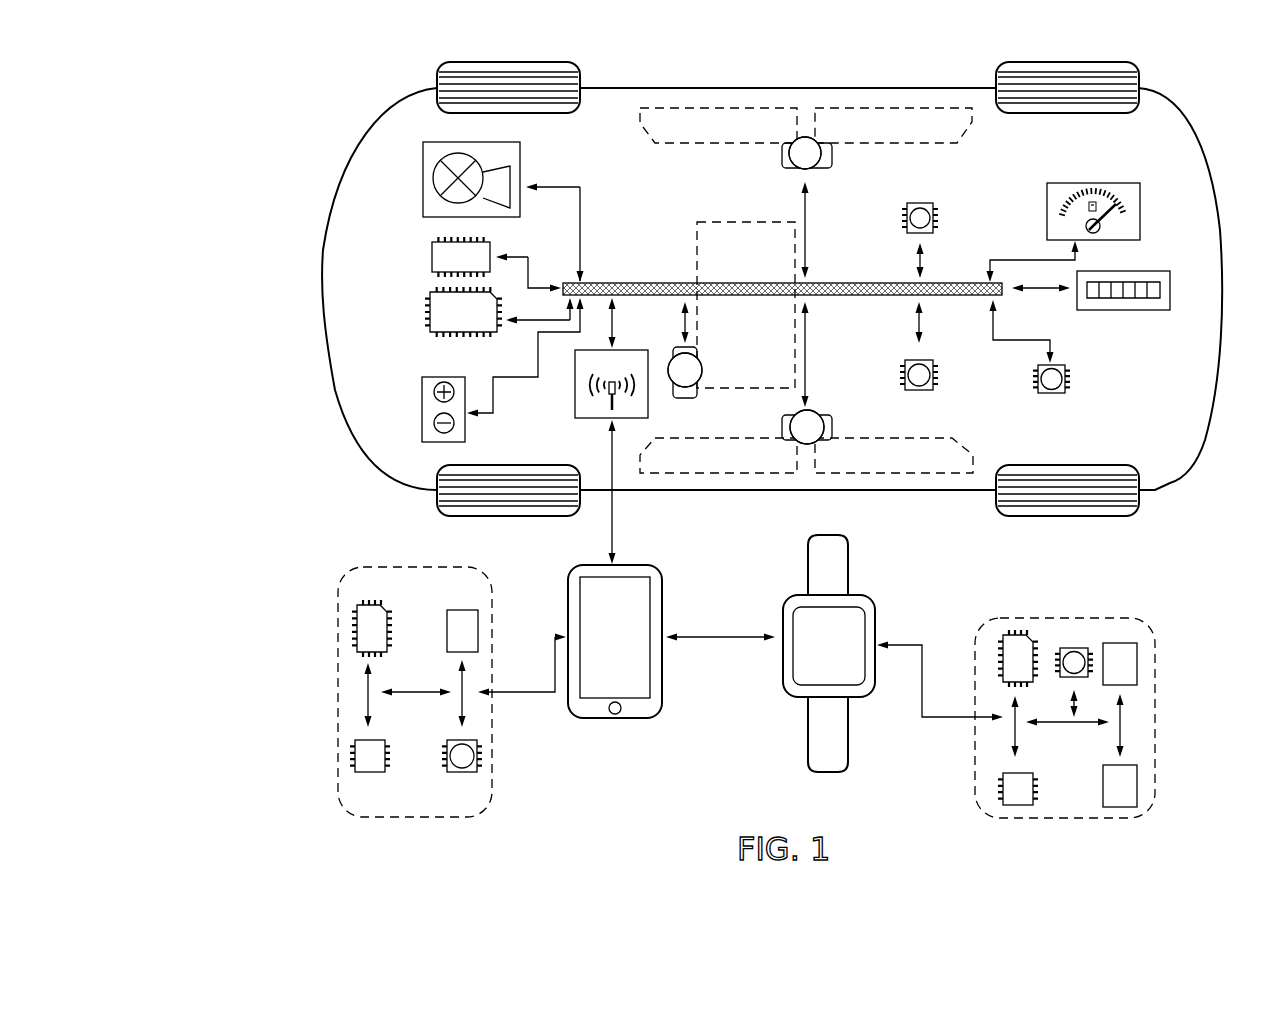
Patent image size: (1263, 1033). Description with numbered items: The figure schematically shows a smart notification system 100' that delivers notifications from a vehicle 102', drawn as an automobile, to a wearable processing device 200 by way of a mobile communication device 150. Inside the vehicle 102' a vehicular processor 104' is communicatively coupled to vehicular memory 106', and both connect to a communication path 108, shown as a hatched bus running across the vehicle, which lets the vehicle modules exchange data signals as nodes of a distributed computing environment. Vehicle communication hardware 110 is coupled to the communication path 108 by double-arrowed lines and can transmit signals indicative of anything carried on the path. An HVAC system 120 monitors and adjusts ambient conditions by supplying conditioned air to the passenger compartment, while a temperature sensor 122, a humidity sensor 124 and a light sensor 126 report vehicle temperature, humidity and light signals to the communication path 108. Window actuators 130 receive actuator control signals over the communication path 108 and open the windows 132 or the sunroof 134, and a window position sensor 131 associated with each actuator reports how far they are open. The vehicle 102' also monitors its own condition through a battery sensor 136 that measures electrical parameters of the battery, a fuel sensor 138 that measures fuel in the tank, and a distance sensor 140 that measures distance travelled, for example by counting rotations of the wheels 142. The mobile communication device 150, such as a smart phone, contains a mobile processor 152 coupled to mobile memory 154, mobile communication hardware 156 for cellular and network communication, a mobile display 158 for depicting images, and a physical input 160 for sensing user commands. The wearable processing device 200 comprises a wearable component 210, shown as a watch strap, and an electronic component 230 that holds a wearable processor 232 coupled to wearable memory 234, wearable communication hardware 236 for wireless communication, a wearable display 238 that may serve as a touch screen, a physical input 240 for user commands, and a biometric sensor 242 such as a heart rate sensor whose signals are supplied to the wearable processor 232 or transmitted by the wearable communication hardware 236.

The smart notification system 100' is at (703, 457).
The vehicle 102' is at (741, 289).
The vehicular processor 104' is at (464, 313).
The vehicular memory 106' is at (459, 264).
The communication path 108 is at (835, 282).
The vehicle communication hardware 110 is at (575, 405).
The HVAC system 120 is at (423, 188).
The temperature sensor 122 is at (900, 382).
The humidity sensor 124 is at (1033, 382).
The light sensor 126 is at (938, 214).
The window actuator 130 is at (782, 160).
The window position sensor 131 is at (808, 160).
The window 132 is at (655, 144).
The sunroof 134 is at (697, 250).
The battery sensor 136 is at (422, 388).
The fuel sensor 138 is at (1105, 183).
The distance sensor 140 is at (1133, 311).
The wheel 142 is at (437, 80).
The mobile communication device 150 is at (664, 731).
The mobile processor 152 is at (352, 628).
The mobile memory 154 is at (350, 760).
The mobile communication hardware 156 is at (478, 630).
The mobile display 158 is at (662, 588).
The physical input 160 is at (482, 755).
The wearable processing device 200 is at (892, 581).
The wearable component 210 is at (802, 742).
The electronic component 230 is at (768, 688).
The wearable processor 232 is at (1017, 629).
The wearable memory 234 is at (1016, 806).
The wearable communication hardware 236 is at (1120, 643).
The wearable display 238 is at (793, 622).
The physical input 240 is at (1137, 785).
The biometric sensor 242 is at (1074, 647).